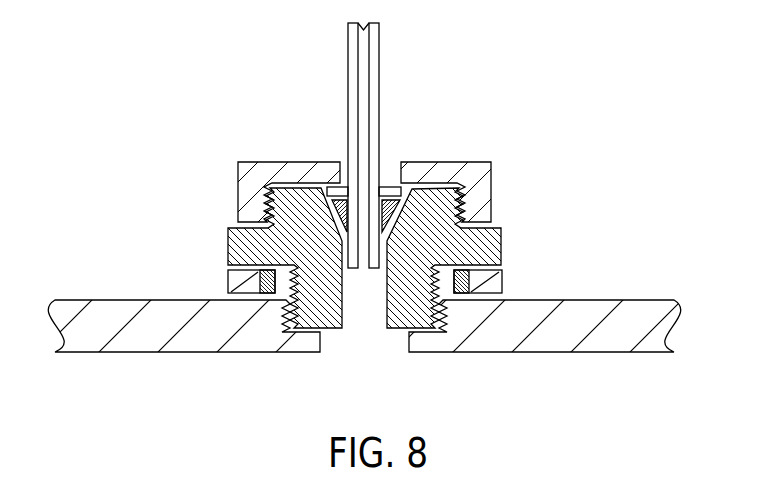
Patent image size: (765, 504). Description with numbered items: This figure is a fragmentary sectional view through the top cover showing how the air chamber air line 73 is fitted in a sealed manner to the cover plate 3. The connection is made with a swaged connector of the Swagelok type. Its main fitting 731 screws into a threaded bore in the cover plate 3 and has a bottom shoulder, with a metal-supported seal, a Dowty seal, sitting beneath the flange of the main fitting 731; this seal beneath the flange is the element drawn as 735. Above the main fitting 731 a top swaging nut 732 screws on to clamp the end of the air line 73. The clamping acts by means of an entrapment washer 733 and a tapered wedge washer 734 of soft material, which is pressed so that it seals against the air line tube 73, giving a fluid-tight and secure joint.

The cover plate 3 is at (188, 300).
The air chamber air line 73 is at (380, 60).
The main fitting 731 is at (503, 245).
The top swaging nut 732 is at (493, 187).
The entrapment washer 733 is at (391, 186).
The tapered wedge washer 734 is at (400, 213).
The gasket 735 is at (503, 282).